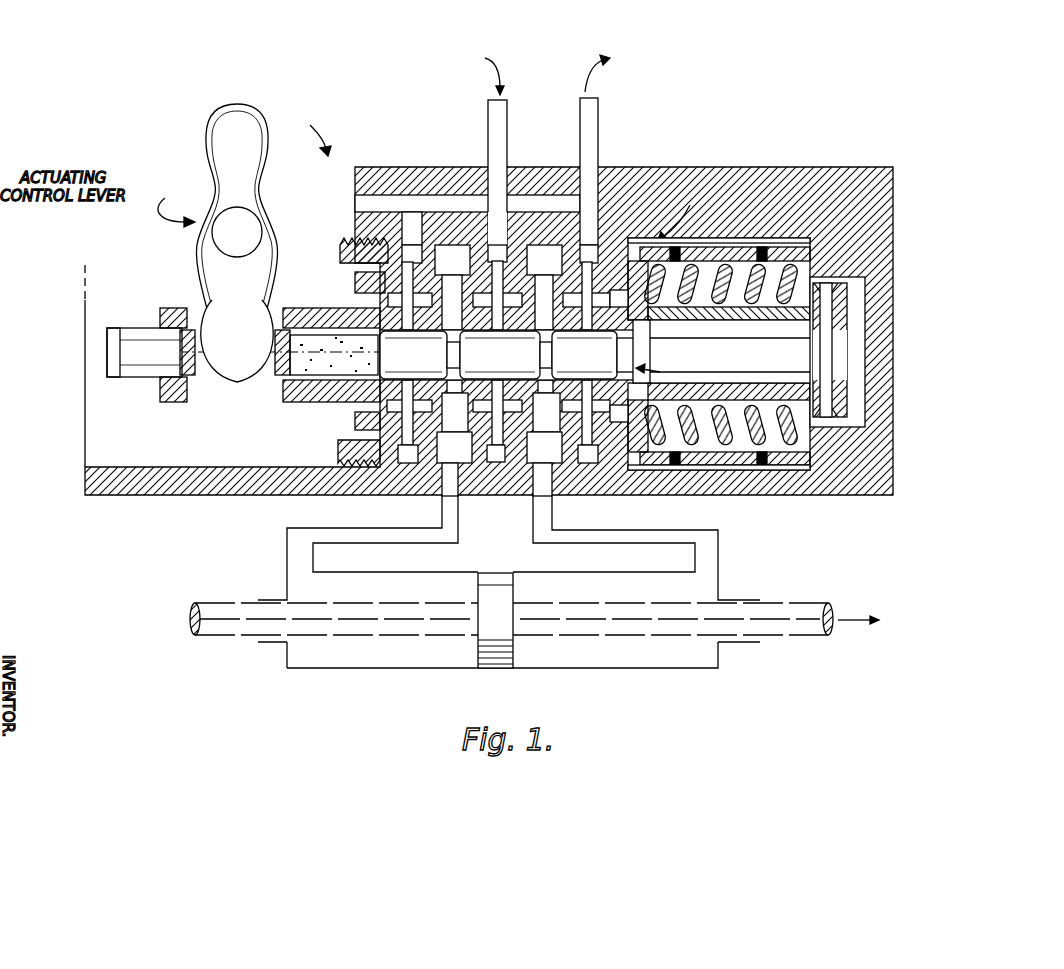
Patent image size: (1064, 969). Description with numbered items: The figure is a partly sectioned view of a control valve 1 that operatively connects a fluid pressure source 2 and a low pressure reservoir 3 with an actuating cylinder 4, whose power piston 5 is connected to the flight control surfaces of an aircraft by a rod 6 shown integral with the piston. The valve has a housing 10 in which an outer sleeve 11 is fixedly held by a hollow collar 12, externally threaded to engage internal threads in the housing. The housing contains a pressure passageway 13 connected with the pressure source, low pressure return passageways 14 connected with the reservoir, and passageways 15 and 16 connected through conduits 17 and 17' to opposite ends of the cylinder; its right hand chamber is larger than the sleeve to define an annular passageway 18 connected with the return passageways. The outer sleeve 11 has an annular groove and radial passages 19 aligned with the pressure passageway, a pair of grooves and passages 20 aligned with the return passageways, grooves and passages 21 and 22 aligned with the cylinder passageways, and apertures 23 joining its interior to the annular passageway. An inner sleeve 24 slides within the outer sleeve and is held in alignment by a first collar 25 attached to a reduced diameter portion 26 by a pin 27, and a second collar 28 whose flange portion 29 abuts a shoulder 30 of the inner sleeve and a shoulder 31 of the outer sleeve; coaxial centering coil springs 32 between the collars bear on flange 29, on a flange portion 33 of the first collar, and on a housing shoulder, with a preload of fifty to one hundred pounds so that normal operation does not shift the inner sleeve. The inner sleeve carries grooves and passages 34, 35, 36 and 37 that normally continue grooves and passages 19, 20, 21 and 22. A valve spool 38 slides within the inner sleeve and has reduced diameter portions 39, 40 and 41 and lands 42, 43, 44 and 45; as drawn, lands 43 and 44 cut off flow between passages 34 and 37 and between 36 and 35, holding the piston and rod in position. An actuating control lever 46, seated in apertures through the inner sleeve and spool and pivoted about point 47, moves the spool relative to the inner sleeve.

The control valve 1 is at (219, 257).
The fluid pressure source 2 is at (436, 140).
The low pressure reservoir 3 is at (646, 139).
The actuating cylinder 4 is at (583, 668).
The power piston 5 is at (494, 650).
The rod 6 is at (758, 636).
The housing 10 is at (785, 167).
The outer sleeve 11 is at (721, 329).
The hollow collar 12 is at (340, 250).
The pressure passageway 13 is at (488, 178).
The low pressure return passageways 14 is at (380, 185).
The passageway 15 is at (460, 528).
The passageway 16 is at (530, 528).
The conduit 17 is at (375, 558).
The conduit 17' is at (637, 558).
The annular passageway 18 is at (745, 465).
The annular groove and radial passages 19 is at (512, 185).
The annular grooves and radial passages 20 is at (600, 200).
The annular groove and radial passages 21 is at (440, 445).
The annular groove and radial passages 22 is at (548, 445).
The apertures 23 is at (762, 247).
The inner sleeve 24 is at (755, 378).
The first collar 25 is at (800, 395).
The reduced diameter portion 26 is at (772, 322).
The pin 27 is at (828, 360).
The second collar 28 is at (680, 349).
The flange portion 29 is at (653, 351).
The shoulder 30 is at (625, 295).
The shoulder 31 is at (622, 245).
The centering coil springs 32 is at (812, 270).
The flange portion 33 is at (848, 303).
The annular groove and radial passages 34 is at (480, 455).
The annular groove and radial passages 35 is at (358, 403).
The annular groove and radial passages 36 is at (420, 452).
The annular groove and radial passages 37 is at (540, 450).
The valve spool 38 is at (682, 372).
The reduced diameter portion 39 is at (418, 358).
The reduced diameter portion 40 is at (508, 358).
The reduced diameter portion 41 is at (593, 358).
The land 42 is at (370, 340).
The land 43 is at (452, 252).
The land 44 is at (543, 252).
The land 45 is at (658, 371).
The actuating control lever 46 is at (218, 243).
The pivot point 47 is at (245, 228).